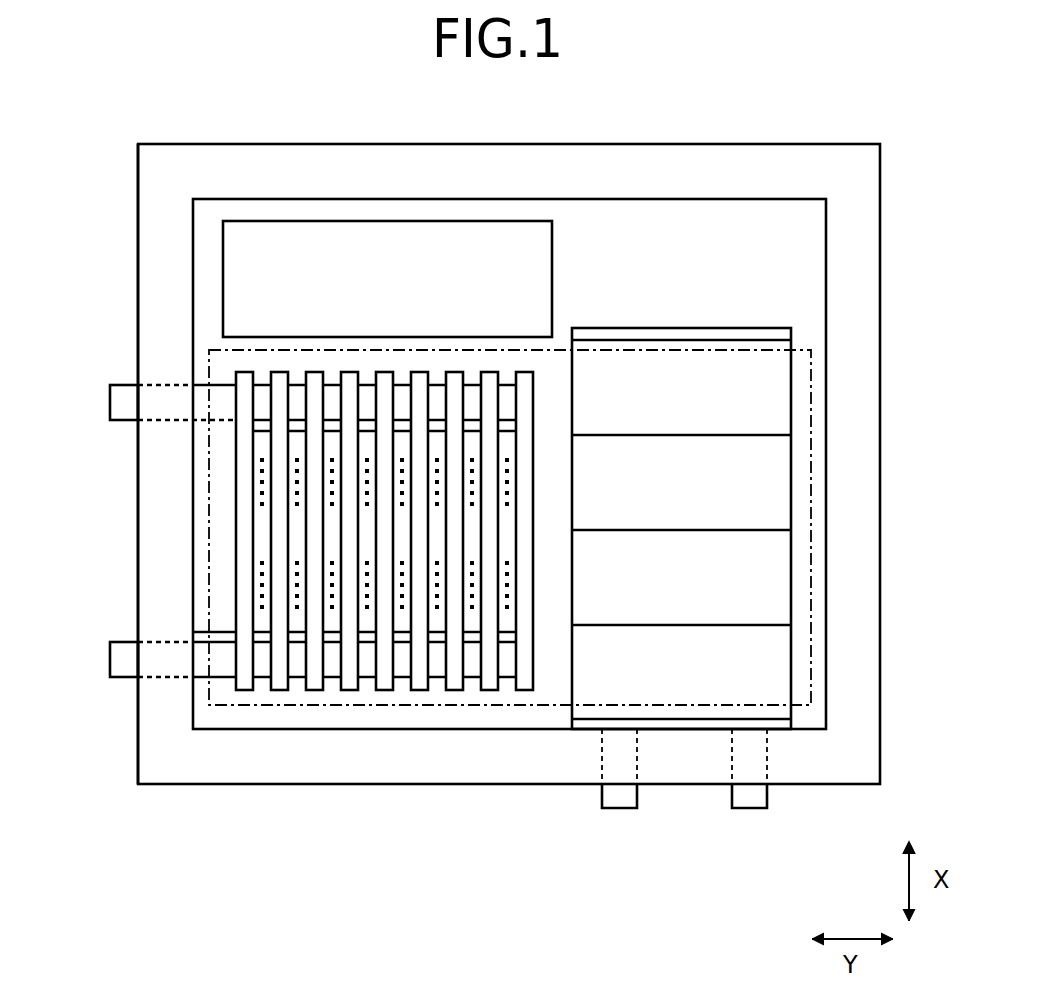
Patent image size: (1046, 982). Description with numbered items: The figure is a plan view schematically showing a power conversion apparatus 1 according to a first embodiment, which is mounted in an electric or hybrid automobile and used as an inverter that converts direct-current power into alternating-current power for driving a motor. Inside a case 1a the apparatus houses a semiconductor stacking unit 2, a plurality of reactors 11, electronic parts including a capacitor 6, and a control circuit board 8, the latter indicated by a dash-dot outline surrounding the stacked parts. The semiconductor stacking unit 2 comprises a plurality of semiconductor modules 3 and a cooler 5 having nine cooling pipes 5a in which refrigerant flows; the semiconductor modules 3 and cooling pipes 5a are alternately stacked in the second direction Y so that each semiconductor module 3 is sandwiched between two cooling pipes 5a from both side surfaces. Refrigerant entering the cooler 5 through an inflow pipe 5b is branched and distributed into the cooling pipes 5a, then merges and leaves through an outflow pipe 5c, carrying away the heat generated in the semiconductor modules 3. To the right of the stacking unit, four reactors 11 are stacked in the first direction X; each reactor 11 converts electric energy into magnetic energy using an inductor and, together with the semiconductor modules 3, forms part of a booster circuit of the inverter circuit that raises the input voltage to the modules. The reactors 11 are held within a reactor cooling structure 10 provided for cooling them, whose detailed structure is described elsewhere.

The power conversion apparatus 1 is at (895, 152).
The case 1a is at (157, 272).
The semiconductor stacking unit 2 is at (92, 531).
The semiconductor module 3 is at (253, 516).
The cooler 5 is at (296, 595).
The cooling pipe 5a is at (350, 690).
The inflow pipe 5b is at (127, 668).
The outflow pipe 5c is at (125, 397).
The capacitor 6 is at (310, 220).
The control circuit board 8 is at (415, 708).
The reactor cooling structure 10 is at (785, 320).
The reactor 11 is at (794, 392).